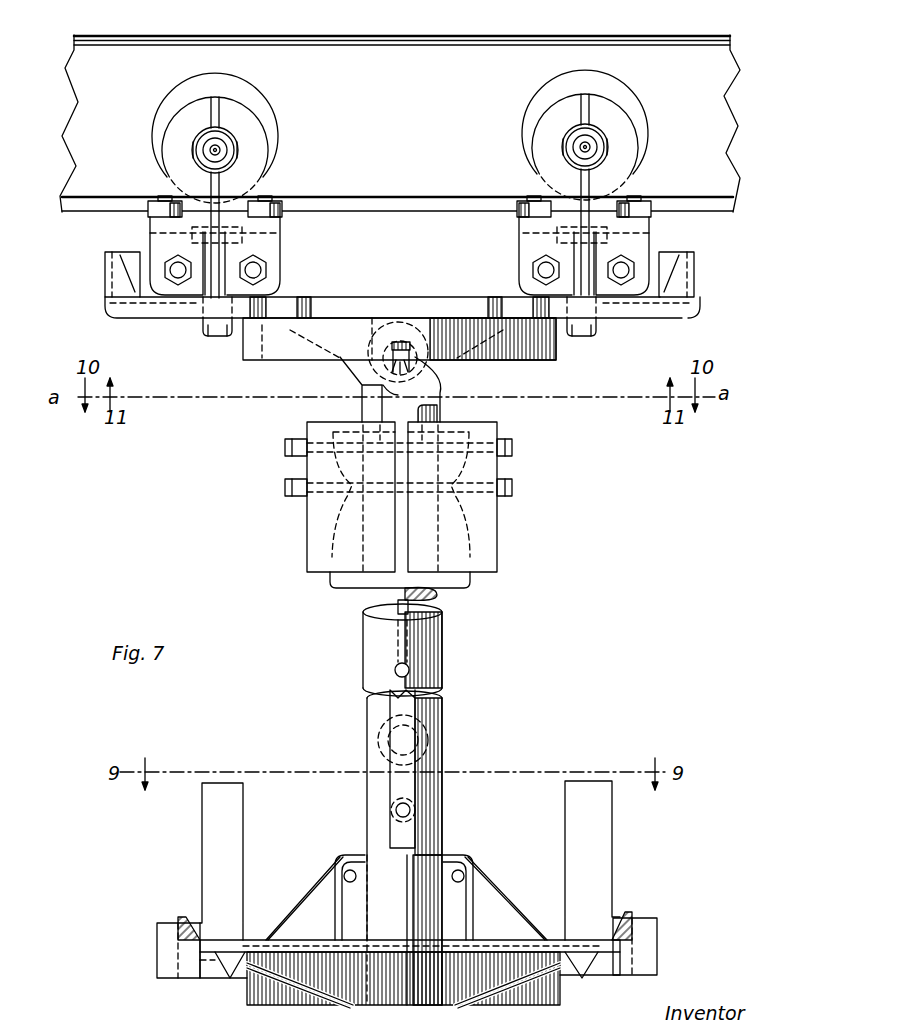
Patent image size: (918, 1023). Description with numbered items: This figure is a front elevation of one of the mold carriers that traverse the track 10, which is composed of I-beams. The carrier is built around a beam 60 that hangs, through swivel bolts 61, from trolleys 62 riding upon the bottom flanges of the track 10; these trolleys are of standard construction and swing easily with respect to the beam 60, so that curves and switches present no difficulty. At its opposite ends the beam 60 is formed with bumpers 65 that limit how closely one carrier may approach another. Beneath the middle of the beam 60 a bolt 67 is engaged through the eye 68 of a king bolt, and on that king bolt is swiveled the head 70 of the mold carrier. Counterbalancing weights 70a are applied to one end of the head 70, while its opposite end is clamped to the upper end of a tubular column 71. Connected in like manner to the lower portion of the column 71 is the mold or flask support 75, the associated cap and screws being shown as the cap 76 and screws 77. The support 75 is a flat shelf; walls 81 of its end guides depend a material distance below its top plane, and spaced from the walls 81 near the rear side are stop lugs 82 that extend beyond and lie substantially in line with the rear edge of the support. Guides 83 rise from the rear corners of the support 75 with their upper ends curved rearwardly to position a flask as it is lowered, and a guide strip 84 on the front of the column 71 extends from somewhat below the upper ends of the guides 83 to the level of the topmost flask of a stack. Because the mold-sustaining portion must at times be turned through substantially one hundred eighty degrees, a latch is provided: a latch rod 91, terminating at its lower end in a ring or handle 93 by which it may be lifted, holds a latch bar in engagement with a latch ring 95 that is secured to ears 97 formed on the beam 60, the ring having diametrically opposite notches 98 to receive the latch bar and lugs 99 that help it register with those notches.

The track 10 is at (419, 57).
The trolleys 62 is at (262, 152).
The bumpers 65 is at (105, 277).
The swivel bolts 61 is at (205, 335).
The ears 97 is at (305, 303).
The beam 60 is at (404, 300).
The notches 98 is at (398, 340).
The lugs 99 is at (362, 366).
The bolt 67 is at (412, 360).
The eye 68 is at (428, 396).
The latch ring 95 is at (528, 356).
The head 70 is at (400, 472).
The counterbalancing weights 70a is at (488, 538).
The latch rod 91 is at (410, 608).
The tubular column 71 is at (440, 648).
The ring or handle 93 is at (378, 738).
The guide strip 84 is at (410, 777).
The guides 83 is at (238, 818).
The screws 77 is at (349, 860).
The cap 76 is at (404, 930).
The mold or flask support 75 is at (312, 940).
The walls 81 is at (190, 917).
The stop lugs 82 is at (157, 946).